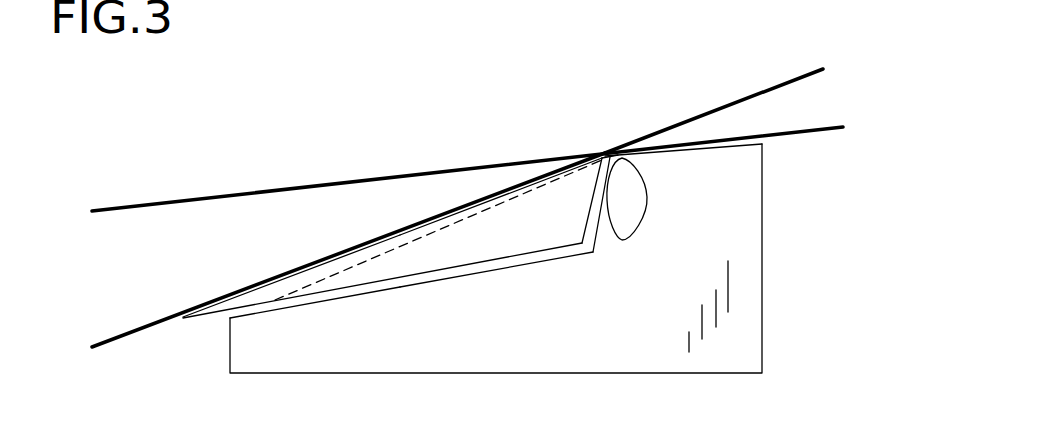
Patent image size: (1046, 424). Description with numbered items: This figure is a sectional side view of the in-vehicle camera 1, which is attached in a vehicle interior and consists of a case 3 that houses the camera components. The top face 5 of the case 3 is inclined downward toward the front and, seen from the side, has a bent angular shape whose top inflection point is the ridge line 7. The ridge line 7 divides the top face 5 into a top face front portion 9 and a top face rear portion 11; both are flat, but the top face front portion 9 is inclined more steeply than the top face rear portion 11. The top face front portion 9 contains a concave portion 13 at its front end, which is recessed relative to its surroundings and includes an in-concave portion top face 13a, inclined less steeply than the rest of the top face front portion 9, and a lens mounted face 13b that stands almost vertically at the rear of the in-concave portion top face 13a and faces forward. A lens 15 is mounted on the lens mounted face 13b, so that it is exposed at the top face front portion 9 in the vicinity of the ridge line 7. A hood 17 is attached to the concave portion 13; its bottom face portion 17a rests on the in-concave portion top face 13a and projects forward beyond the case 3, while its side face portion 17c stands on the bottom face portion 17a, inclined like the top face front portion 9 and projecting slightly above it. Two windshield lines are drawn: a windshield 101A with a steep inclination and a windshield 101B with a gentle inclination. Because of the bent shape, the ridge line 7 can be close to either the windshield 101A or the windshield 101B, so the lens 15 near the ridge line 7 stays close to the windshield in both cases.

The in-vehicle camera 1 is at (751, 203).
The case 3 is at (762, 312).
The top face 5 is at (707, 147).
The ridge line 7 is at (606, 151).
The top face front portion 9 is at (386, 255).
The top face rear portion 11 is at (677, 151).
The concave portion 13 is at (318, 302).
The in-concave portion top face 13a is at (510, 268).
The lens mounted face 13b is at (597, 242).
The lens 15 is at (632, 218).
The hood 17 is at (208, 313).
The bottom face portion 17a is at (448, 263).
The side face portion 17c is at (520, 227).
The windshield having a steep inclination 101A is at (183, 200).
The windshield having a gentle inclination 101B is at (107, 340).